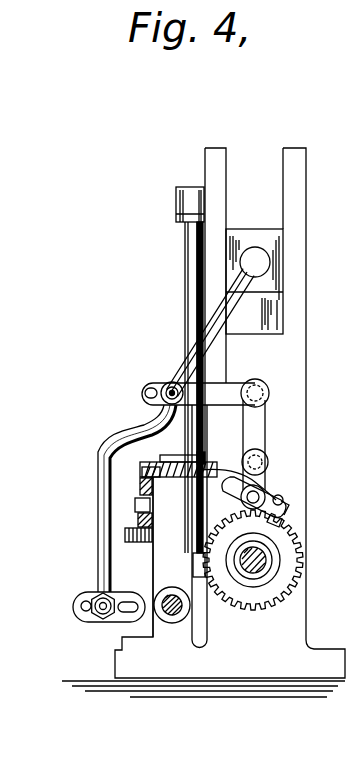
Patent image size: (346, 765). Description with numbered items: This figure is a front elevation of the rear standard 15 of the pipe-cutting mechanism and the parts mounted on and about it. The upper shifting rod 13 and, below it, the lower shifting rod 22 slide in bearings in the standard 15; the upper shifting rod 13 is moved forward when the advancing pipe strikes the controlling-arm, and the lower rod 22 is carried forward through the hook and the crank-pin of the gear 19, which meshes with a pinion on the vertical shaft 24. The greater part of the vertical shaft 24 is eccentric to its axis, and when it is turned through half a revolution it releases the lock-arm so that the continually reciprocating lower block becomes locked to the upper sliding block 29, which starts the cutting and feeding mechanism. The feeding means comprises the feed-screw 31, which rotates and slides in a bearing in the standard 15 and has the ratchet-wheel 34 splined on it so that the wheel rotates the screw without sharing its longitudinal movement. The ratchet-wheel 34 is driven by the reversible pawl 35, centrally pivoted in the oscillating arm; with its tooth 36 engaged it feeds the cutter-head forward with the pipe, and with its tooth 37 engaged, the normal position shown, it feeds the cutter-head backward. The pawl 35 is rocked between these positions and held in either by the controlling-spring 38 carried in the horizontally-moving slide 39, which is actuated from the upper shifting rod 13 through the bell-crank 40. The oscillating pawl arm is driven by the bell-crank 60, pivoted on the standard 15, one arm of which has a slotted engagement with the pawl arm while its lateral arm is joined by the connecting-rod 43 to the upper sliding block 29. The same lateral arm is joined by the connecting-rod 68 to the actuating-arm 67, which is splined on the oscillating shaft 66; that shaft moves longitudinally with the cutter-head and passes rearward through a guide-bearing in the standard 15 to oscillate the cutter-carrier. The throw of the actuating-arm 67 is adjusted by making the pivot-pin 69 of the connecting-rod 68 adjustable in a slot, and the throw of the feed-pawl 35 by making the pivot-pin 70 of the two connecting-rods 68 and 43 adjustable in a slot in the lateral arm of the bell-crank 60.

The shifting rod 13 is at (140, 484).
The rear standard 15 is at (298, 618).
The gear 19 is at (130, 543).
The shifting rod 22 is at (138, 520).
The vertical shaft 24 is at (186, 250).
The sliding block 29 is at (277, 280).
The feed-screw 31 is at (245, 566).
The ratchet-wheel 34 is at (292, 577).
The reversible pawl 35 is at (287, 508).
The tooth 36 is at (226, 486).
The tooth 37 is at (280, 522).
The controlling-spring 38 is at (284, 495).
The slide 39 is at (150, 468).
The bell-crank 40 is at (180, 458).
The connecting-rod 43 is at (207, 337).
The bell-crank 60 is at (262, 425).
The oscillating shaft 66 is at (172, 615).
The actuating-arm 67 is at (84, 618).
The connecting-rod 68 is at (98, 525).
The pivot-pin 69 is at (73, 596).
The pivot-pin 70 is at (165, 384).